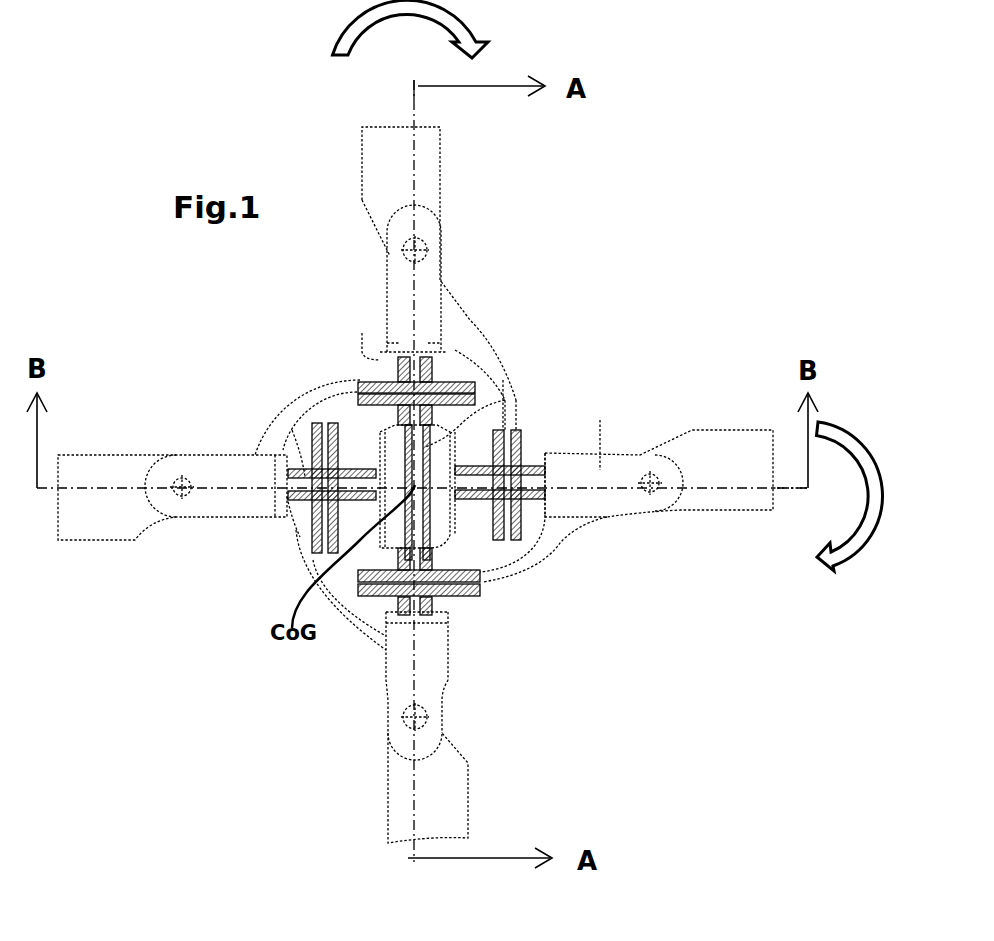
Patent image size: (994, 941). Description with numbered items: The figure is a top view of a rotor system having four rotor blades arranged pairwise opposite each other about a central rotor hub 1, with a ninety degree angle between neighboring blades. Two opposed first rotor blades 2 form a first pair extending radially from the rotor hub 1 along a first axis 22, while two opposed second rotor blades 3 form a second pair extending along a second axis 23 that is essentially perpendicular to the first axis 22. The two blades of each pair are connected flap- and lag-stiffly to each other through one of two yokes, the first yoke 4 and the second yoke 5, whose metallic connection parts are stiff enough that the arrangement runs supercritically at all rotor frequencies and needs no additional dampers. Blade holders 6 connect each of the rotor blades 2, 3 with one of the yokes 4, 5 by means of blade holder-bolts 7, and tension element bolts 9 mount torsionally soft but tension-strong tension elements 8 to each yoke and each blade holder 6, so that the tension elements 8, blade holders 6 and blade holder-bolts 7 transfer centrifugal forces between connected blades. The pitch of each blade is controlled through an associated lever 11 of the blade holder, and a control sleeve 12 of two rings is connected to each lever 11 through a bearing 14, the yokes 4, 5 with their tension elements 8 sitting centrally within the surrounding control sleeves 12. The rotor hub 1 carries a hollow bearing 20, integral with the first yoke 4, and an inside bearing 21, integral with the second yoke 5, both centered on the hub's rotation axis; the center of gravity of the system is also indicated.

The rotor hub 1 is at (382, 444).
The first rotor blades 2 is at (442, 145).
The second rotor blades 3 is at (96, 468).
The first yoke 4 is at (394, 366).
The second yoke 5 is at (308, 463).
The blade holder 6 is at (598, 458).
The blade holder-bolt 7 is at (442, 252).
The tension element 8 is at (300, 537).
The tension element bolt 9 is at (325, 557).
The lever of the blade holder 11 is at (556, 538).
The control sleeve 12 is at (372, 622).
The bearing of the lever of the blade holder 14 is at (506, 596).
The hollow bearing 20 is at (512, 396).
The inside bearing 21 is at (458, 588).
The first axis 22 is at (414, 89).
The second axis 23 is at (803, 484).